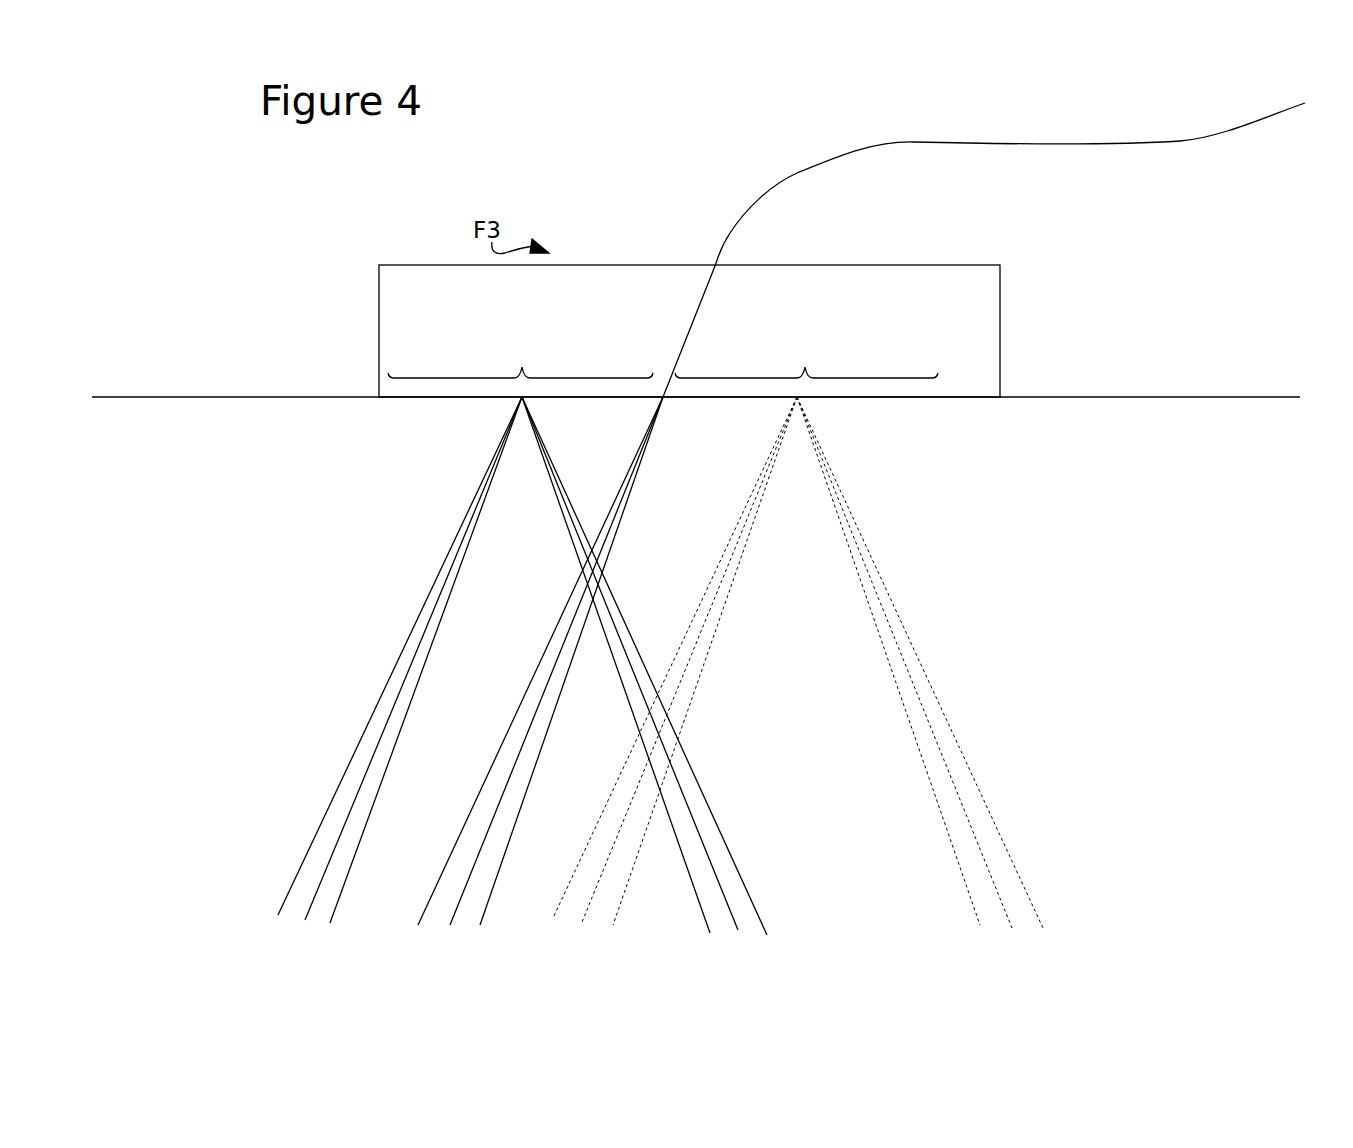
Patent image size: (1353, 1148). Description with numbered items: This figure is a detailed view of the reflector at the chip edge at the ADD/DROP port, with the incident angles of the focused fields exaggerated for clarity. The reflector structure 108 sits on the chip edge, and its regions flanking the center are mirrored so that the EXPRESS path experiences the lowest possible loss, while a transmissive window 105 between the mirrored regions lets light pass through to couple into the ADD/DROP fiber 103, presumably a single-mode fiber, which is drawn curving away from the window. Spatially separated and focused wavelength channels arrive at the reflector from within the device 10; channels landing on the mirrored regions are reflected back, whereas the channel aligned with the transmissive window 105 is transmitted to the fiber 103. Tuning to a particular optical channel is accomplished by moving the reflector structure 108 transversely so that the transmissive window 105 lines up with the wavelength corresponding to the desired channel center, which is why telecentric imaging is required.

The medium / body under test 10 is at (631, 666).
The ADD/DROP fiber 103 is at (1052, 146).
The transmissive window 105 is at (663, 392).
The reflector structure 108 is at (995, 334).